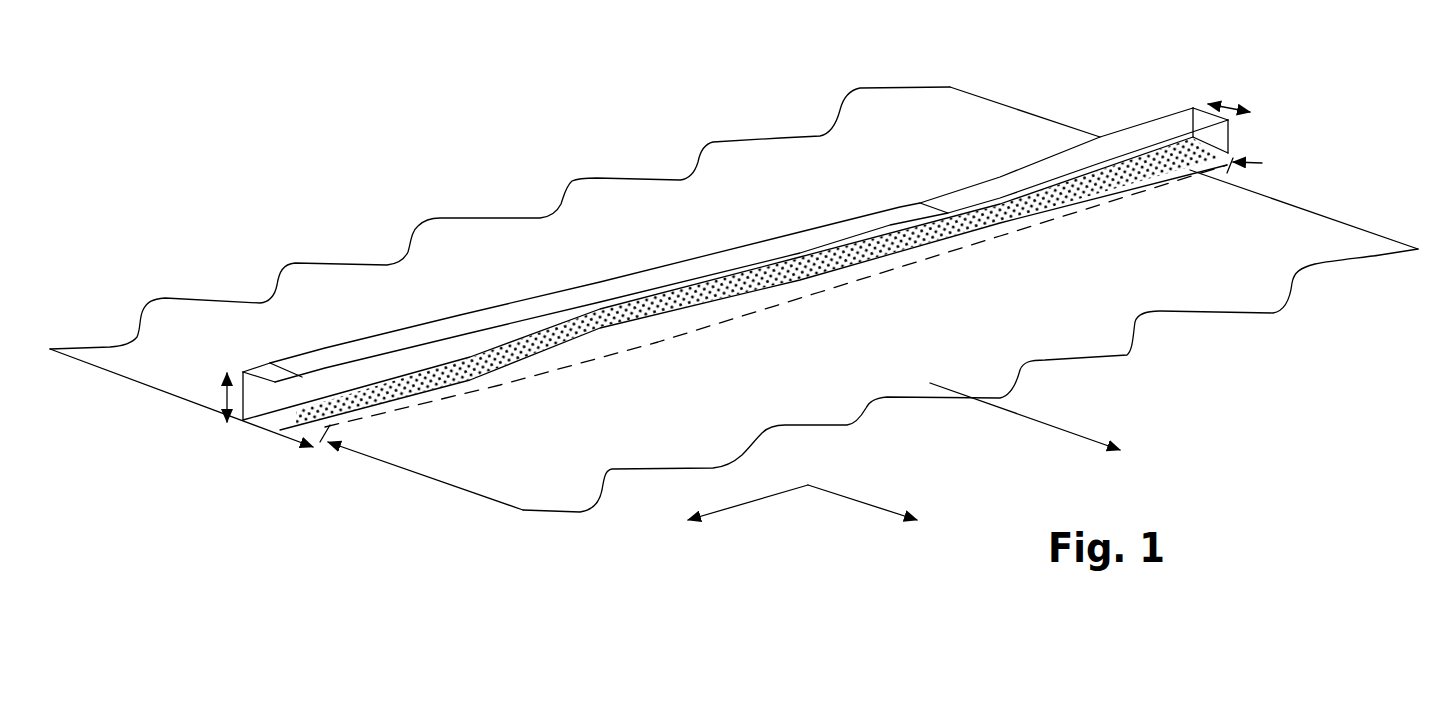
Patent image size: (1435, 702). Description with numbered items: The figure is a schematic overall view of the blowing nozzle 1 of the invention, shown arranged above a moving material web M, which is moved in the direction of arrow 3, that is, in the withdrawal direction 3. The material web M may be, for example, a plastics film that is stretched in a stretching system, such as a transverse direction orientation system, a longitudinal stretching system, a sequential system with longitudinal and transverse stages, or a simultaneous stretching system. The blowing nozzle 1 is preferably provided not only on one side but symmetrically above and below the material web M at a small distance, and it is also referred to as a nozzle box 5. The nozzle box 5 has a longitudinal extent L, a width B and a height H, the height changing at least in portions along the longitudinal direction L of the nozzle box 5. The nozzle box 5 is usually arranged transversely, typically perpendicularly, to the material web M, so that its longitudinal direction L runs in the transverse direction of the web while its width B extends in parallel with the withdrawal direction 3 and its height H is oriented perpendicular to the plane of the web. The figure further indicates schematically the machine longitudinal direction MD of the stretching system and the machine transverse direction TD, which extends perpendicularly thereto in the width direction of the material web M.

The blowing nozzle 1 is at (735, 269).
The nozzle box 5 is at (713, 225).
The material web M is at (347, 290).
The longitudinal extent L is at (658, 342).
The width B is at (1230, 107).
The height H is at (222, 388).
The withdrawal direction 3 is at (1072, 418).
The machine transverse direction TD is at (753, 500).
The machine longitudinal direction MD is at (862, 500).